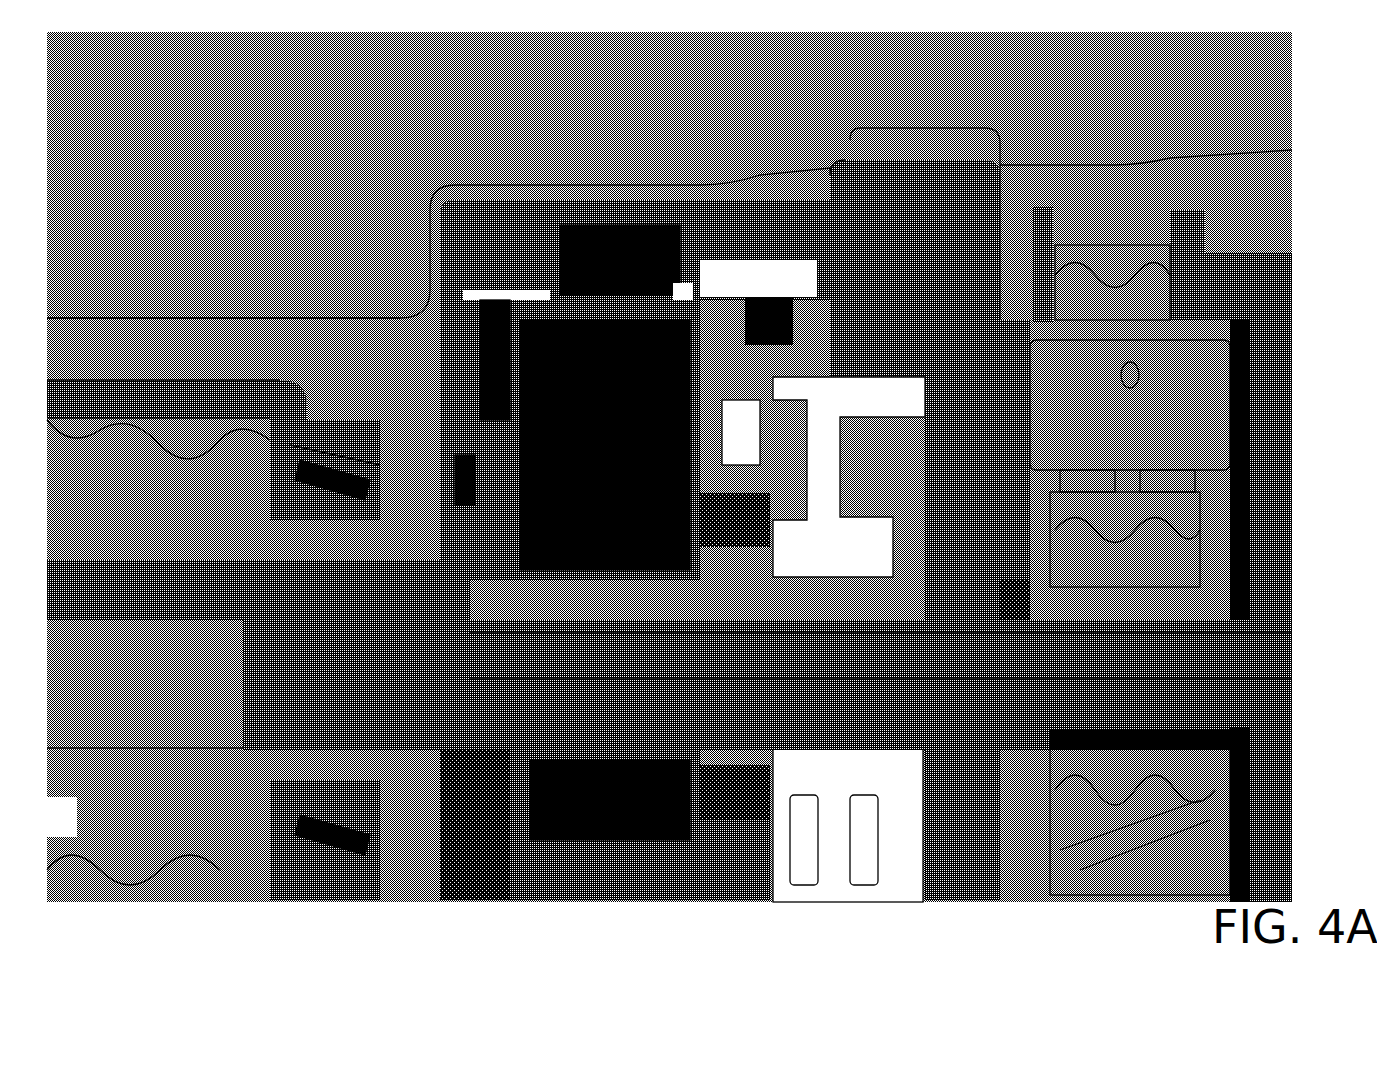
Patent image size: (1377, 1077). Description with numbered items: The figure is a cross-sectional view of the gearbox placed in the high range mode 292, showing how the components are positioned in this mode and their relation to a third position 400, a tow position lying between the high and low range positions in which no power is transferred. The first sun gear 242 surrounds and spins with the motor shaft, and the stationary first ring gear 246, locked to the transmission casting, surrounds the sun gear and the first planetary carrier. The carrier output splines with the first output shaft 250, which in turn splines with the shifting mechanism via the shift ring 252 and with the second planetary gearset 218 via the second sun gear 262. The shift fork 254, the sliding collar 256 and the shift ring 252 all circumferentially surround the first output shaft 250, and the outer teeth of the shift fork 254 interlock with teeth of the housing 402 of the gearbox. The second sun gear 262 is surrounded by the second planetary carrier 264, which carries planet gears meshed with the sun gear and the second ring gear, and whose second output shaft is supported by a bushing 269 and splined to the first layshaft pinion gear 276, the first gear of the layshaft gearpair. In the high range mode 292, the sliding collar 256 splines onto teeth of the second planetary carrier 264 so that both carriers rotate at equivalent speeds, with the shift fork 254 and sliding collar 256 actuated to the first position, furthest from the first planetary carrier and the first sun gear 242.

The third position 400 is at (1300, 69).
The housing 402 is at (633, 180).
The high range mode 292 is at (168, 192).
The second planetary gearset 218 is at (520, 265).
The shift fork 254 is at (615, 228).
The sliding collar 256 is at (820, 345).
The shift ring 252 is at (873, 392).
The first ring gear 246 is at (1160, 380).
The second planetary carrier 264 is at (530, 398).
The first layshaft pinion gear 276 is at (205, 447).
The bushing 269 is at (330, 572).
The second sun gear 262 is at (592, 770).
The first output shaft 250 is at (750, 718).
The first sun gear 242 is at (1195, 757).